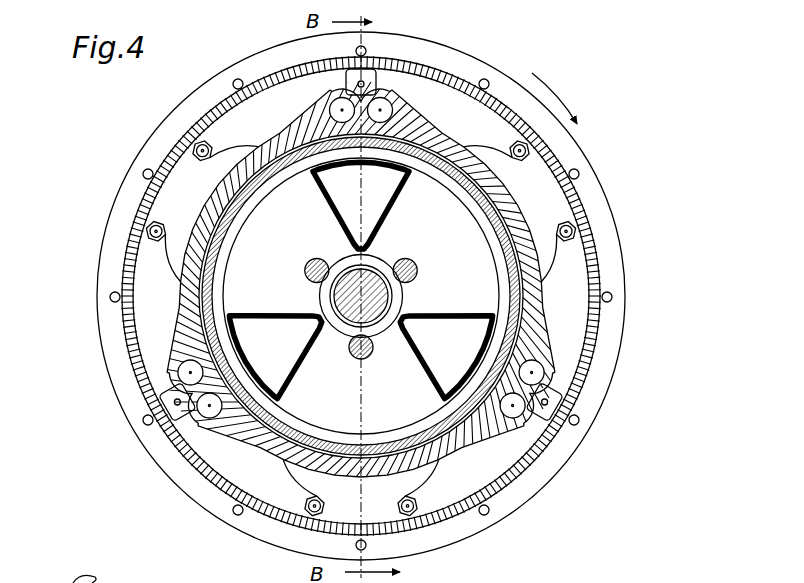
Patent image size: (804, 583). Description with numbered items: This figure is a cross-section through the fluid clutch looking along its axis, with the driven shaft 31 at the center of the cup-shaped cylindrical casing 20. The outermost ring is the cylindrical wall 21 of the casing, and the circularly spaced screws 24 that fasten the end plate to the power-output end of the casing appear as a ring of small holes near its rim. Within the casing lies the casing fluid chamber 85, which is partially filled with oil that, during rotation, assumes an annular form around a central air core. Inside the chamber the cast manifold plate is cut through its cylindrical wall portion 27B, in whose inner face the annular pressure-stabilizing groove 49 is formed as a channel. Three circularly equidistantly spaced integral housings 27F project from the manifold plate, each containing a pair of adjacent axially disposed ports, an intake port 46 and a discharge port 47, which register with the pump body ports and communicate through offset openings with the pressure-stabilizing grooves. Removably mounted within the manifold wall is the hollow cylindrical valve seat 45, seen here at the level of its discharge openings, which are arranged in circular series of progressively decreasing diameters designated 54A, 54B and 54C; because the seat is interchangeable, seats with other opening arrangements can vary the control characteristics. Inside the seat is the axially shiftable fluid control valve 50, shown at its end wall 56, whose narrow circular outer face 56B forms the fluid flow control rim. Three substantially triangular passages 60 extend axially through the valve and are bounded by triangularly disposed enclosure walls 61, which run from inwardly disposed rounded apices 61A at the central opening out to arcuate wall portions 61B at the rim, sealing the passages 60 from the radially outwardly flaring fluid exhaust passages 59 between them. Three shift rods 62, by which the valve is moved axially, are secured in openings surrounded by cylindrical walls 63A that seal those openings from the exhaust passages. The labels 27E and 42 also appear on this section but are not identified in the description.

The casing 20 is at (614, 230).
The cylindrical wall 21 is at (548, 162).
The screws 24 is at (483, 79).
The cylindrical wall portion 27B is at (522, 226).
The housing lug 27E is at (546, 204).
The housings 27F is at (332, 103).
The driven shaft 31 is at (377, 303).
The hub 42 is at (320, 296).
The valve seat 45 is at (540, 302).
The intake port 46 is at (394, 109).
The discharge port 47 is at (338, 112).
The pressure-stabilizing groove 49 is at (548, 256).
The fluid control valve 50 is at (197, 308).
The discharge opening 54A is at (495, 235).
The discharge opening 54B is at (503, 250).
The discharge opening 54C is at (508, 292).
The end wall 56 is at (290, 216).
The outer face 56B is at (232, 232).
The fluid exhaust passages 59 is at (261, 271).
The passages 60 is at (372, 219).
The enclosure walls 61 is at (334, 212).
The rounded apices 61A is at (376, 245).
The arcuate wall portions 61B is at (399, 190).
The shift rods 62 is at (306, 266).
The cylindrical walls 63A is at (310, 262).
The casing fluid chamber 85 is at (483, 478).